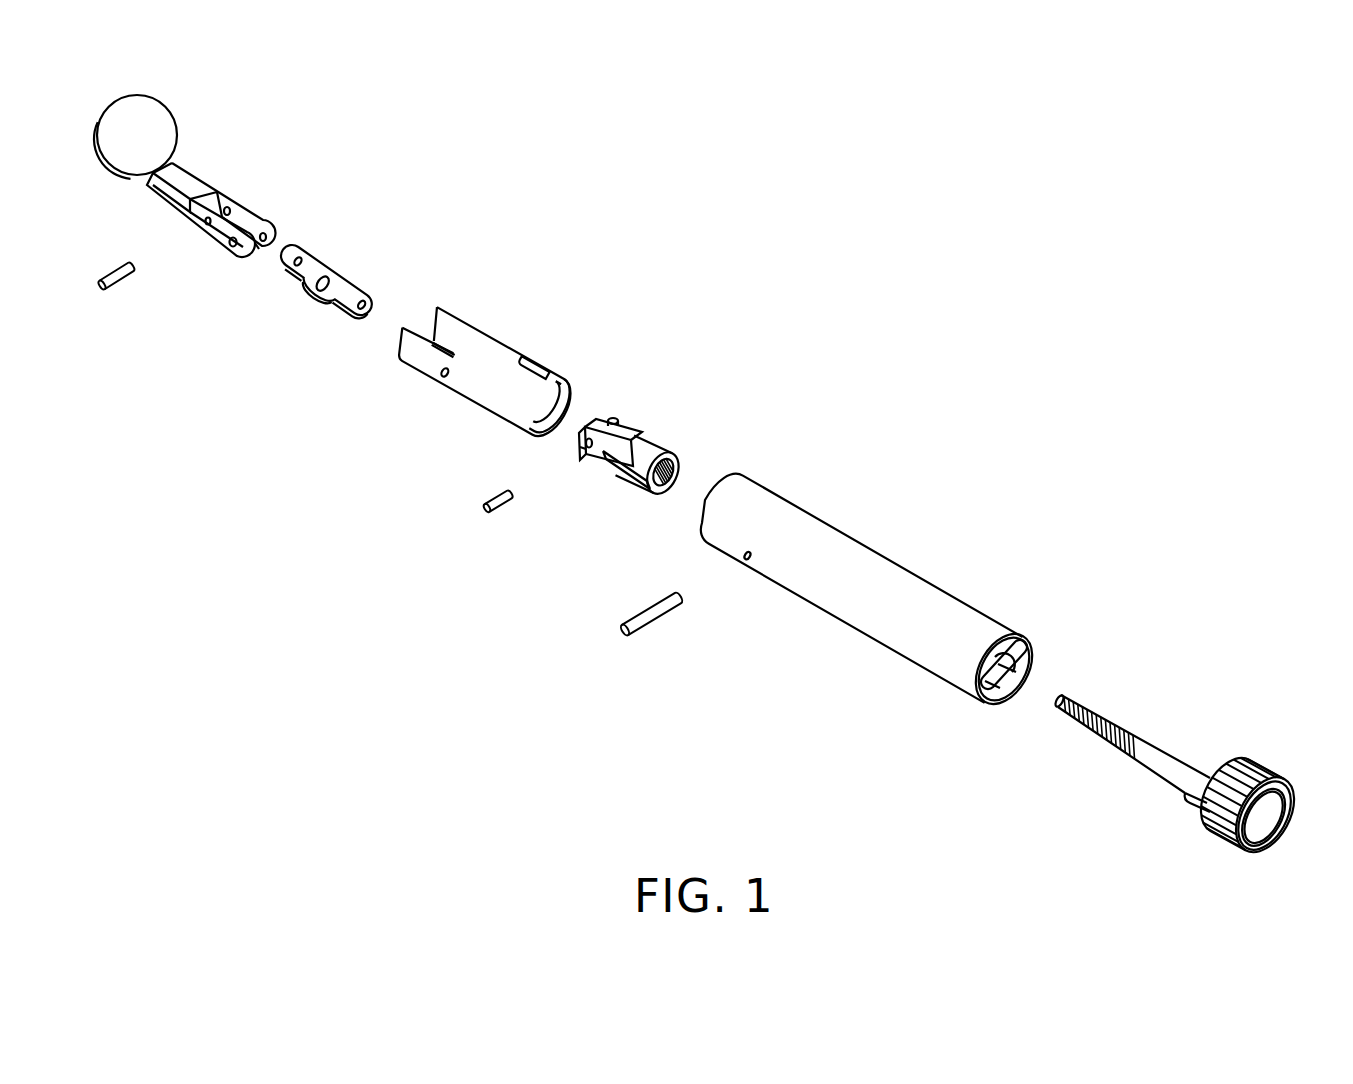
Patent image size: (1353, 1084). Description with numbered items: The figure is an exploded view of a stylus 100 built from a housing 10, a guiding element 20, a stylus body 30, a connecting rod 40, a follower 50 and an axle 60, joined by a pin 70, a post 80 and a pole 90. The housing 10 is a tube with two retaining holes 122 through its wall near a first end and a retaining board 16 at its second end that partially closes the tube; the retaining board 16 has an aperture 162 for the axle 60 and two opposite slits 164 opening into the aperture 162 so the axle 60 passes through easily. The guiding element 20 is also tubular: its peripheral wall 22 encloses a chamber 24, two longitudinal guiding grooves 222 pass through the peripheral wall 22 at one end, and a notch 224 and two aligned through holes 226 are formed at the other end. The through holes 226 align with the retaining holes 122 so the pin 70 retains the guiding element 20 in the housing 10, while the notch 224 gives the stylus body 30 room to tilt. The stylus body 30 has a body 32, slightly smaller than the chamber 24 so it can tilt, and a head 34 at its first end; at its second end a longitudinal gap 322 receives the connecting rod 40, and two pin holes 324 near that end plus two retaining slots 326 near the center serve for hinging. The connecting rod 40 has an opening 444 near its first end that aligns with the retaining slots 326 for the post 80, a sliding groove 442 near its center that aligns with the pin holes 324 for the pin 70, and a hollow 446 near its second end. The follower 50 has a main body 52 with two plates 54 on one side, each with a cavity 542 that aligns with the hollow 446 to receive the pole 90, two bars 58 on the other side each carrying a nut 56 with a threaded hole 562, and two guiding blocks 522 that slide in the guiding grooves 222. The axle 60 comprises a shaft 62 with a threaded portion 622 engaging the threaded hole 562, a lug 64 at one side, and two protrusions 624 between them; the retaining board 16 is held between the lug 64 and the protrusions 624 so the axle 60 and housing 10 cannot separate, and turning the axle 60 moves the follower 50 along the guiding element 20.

The stylus 100 is at (866, 248).
The housing 10 is at (868, 515).
The retaining holes 122 is at (750, 559).
The retaining board 16 is at (1021, 640).
The aperture 162 is at (1034, 663).
The slits 164 is at (993, 700).
The guiding element 20 is at (516, 323).
The peripheral wall 22 is at (485, 386).
The guiding grooves 222 is at (541, 371).
The notch 224 is at (458, 327).
The through holes 226 is at (441, 377).
The chamber 24 is at (563, 386).
The stylus body 30 is at (236, 158).
The body 32 is at (181, 177).
The gap 322 is at (243, 212).
The pin holes 324 is at (218, 249).
The retaining slots 326 is at (200, 226).
The head 34 is at (146, 137).
The connecting rod 40 is at (352, 250).
The sliding groove 442 is at (322, 288).
The opening 444 is at (297, 262).
The hollow 446 is at (364, 313).
The follower 50 is at (703, 444).
The main body 52 is at (607, 461).
The guiding blocks 522 is at (614, 427).
The plates 54 is at (584, 445).
The cavity 542 is at (585, 455).
The nut 56 is at (640, 463).
The bars 58 is at (652, 440).
The threaded hole 562 is at (670, 483).
The axle 60 is at (1189, 716).
The shaft 62 is at (1143, 732).
The threaded portion 622 is at (1085, 715).
The protrusions 624 is at (1194, 796).
The lug 64 is at (1254, 770).
The pin 70 is at (640, 611).
The post 80 is at (120, 282).
The pole 90 is at (488, 505).